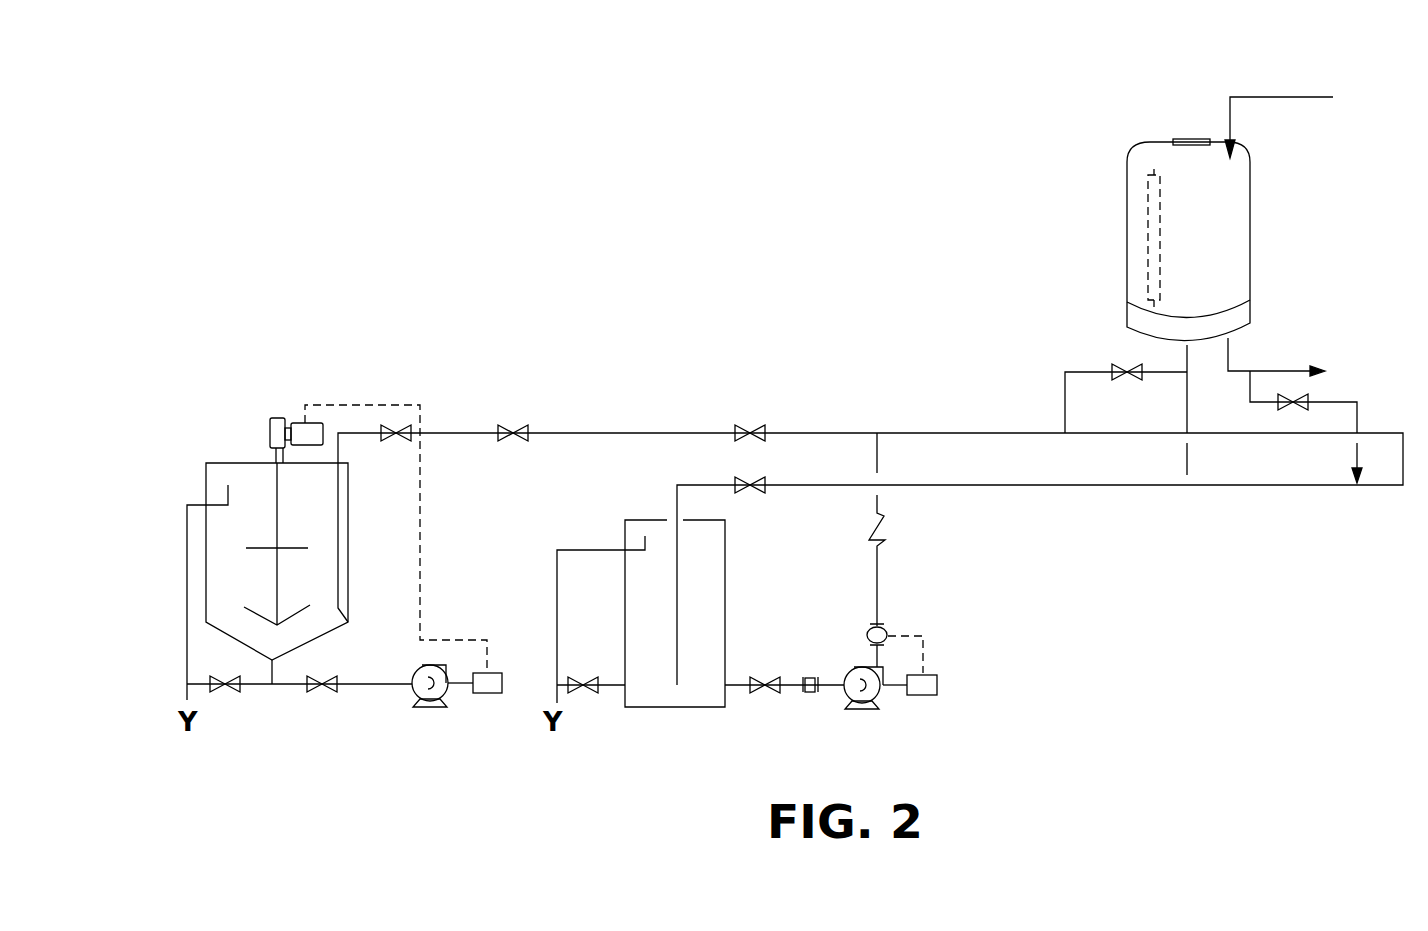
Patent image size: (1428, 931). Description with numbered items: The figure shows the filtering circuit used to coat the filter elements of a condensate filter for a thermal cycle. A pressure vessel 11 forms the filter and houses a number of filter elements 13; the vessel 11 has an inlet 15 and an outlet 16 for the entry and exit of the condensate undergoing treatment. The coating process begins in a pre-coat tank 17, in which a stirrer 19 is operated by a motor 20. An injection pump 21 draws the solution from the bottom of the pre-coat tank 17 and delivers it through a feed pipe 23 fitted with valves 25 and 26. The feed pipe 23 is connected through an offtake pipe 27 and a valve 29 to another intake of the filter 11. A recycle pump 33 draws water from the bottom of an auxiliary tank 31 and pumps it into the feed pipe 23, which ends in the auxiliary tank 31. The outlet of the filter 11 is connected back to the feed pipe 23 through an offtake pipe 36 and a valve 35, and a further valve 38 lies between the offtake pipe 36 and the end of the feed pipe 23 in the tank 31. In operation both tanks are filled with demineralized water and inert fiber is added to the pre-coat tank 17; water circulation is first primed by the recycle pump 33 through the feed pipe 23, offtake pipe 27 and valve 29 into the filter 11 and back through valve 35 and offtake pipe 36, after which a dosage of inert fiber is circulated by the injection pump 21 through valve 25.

The pressure vessel 11 is at (1155, 140).
The filter elements 13 is at (1150, 200).
The inlet 15 is at (1285, 97).
The outlet 16 is at (1268, 378).
The pre-coat tank 17 is at (244, 473).
The stirrer 19 is at (286, 505).
The motor 20 is at (298, 423).
The injection pump 21 is at (420, 688).
The feed pipe 23 is at (618, 437).
The valve 25 is at (508, 430).
The valve 26 is at (400, 430).
The offtake pipe 27 is at (1065, 402).
The valve 29 is at (1122, 366).
The auxiliary tank 31 is at (705, 613).
The recycle pump 33 is at (852, 690).
The valve 35 is at (1300, 395).
The offtake pipe 36 is at (1357, 412).
The valve 38 is at (748, 484).